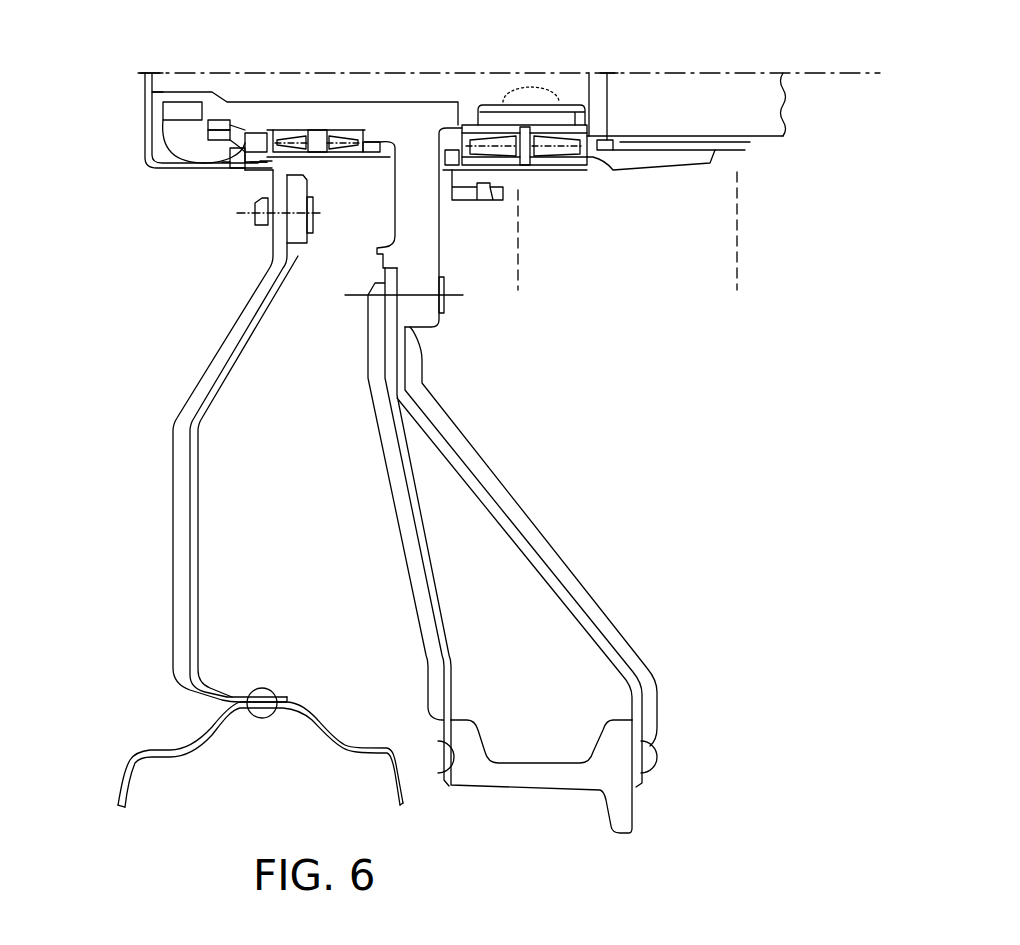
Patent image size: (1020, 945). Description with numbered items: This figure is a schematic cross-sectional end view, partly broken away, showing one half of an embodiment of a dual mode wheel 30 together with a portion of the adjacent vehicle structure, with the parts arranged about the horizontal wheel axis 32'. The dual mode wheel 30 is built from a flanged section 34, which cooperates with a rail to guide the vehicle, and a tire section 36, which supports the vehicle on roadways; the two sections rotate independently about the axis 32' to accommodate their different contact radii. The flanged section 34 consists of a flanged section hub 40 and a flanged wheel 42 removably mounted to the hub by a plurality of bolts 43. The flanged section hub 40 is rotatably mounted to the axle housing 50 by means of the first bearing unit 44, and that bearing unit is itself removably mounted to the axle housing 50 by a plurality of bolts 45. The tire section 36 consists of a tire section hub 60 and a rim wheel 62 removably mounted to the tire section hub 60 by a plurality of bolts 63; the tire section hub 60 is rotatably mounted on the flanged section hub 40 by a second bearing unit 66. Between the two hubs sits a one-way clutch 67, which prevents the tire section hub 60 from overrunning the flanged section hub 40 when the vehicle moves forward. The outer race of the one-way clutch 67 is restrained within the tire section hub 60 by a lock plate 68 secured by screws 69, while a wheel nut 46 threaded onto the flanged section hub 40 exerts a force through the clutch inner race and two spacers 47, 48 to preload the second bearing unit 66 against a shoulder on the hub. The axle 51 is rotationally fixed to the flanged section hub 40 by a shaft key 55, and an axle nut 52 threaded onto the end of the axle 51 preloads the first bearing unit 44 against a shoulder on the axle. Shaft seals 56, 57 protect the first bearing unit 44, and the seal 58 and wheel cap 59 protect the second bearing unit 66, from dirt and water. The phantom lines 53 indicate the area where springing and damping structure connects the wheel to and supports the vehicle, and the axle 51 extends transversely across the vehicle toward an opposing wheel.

The dual mode wheel 30 is at (522, 830).
The horizontal wheel axis 32' is at (510, 45).
The flanged section 34 is at (718, 752).
The tire section 36 is at (118, 693).
The flanged section hub 40 is at (442, 328).
The flanged wheel 42 is at (480, 447).
The bolts 43 is at (368, 294).
The first bearing unit 44 is at (538, 170).
The bolts 45 is at (460, 200).
The wheel nut 46 is at (164, 168).
The spacer 47 is at (240, 120).
The spacer 48 is at (272, 120).
The axle housing 50 is at (605, 172).
The axle 51 is at (790, 117).
The axle nut 52 is at (162, 117).
The phantom lines 53 is at (518, 283).
The shaft key 55 is at (527, 87).
The shaft seal 56 is at (613, 136).
The shaft seal 57 is at (458, 133).
The seal 58 is at (398, 120).
The wheel cap 59 is at (144, 88).
The tire section hub 60 is at (307, 245).
The rim wheel 62 is at (182, 410).
The bolts 63 is at (256, 226).
The second bearing unit 66 is at (343, 120).
The one-way clutch 67 is at (268, 120).
The lock plate 68 is at (245, 175).
The screws 69 is at (222, 162).